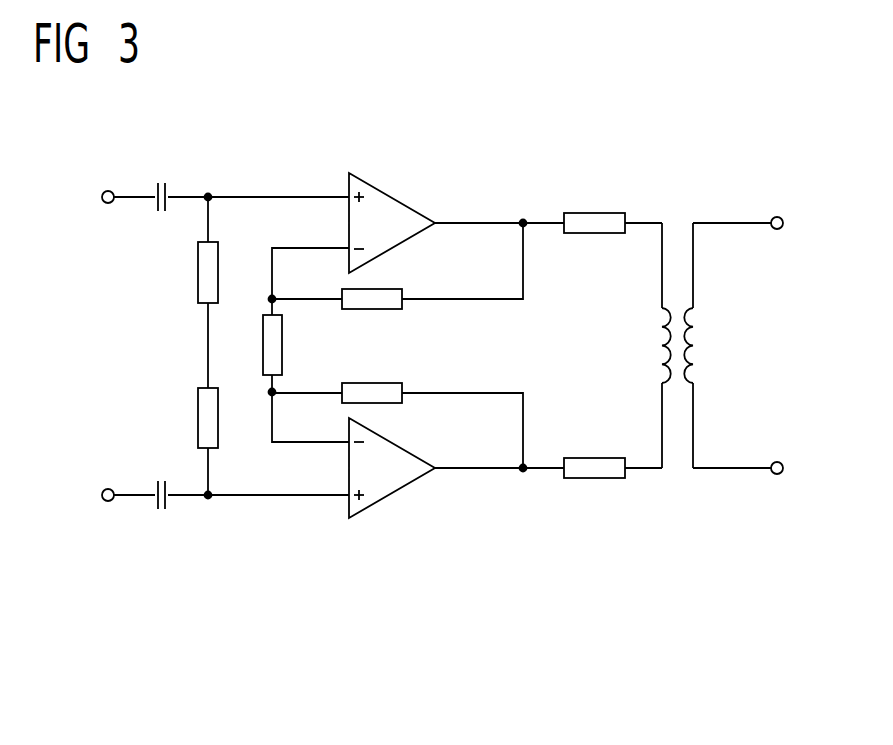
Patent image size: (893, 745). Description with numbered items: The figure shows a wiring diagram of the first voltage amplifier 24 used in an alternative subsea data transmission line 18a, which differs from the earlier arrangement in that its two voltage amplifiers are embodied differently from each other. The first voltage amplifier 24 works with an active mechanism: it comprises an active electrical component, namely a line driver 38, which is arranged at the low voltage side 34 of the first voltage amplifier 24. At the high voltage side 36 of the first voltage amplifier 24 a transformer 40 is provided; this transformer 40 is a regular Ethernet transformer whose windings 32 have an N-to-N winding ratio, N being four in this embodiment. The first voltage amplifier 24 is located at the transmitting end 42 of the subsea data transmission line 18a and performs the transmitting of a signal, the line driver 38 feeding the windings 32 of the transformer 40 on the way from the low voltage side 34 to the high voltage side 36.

The subsea data transmission line 18a is at (743, 221).
The first voltage amplifier 24 is at (310, 580).
The windings 32 is at (667, 344).
The low voltage side 34 is at (57, 362).
The high voltage side 36 is at (780, 304).
The line driver 38 is at (247, 197).
The transformer 40 is at (677, 391).
The transmitting end 42 is at (548, 125).